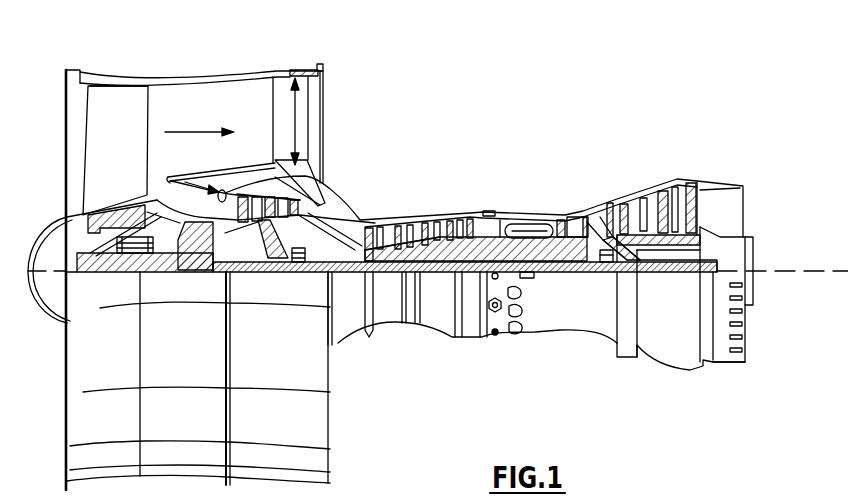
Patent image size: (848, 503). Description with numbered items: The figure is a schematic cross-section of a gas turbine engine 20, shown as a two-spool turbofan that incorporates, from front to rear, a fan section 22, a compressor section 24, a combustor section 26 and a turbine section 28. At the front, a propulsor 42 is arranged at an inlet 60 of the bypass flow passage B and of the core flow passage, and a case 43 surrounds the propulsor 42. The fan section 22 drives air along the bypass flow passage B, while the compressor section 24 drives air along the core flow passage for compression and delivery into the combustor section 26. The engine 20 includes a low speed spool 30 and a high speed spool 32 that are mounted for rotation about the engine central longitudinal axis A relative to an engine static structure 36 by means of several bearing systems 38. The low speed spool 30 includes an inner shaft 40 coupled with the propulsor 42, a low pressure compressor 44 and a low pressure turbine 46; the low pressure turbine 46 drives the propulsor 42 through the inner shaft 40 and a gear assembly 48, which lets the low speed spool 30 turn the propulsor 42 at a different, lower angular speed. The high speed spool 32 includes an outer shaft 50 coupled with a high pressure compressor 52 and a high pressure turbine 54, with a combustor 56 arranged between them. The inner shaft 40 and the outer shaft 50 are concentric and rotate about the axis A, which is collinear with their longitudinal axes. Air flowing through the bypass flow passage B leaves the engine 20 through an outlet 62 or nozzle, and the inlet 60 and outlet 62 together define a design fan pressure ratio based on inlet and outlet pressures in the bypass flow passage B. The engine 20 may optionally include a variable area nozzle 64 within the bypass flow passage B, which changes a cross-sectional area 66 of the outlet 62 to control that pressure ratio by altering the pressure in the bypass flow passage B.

The gas turbine engine 20 is at (530, 105).
The fan section 22 is at (146, 60).
The compressor section 24 is at (368, 198).
The combustor section 26 is at (524, 195).
The turbine section 28 is at (632, 165).
The low speed spool 30 is at (441, 288).
The high speed spool 32 is at (474, 214).
The engine static structure 36 is at (470, 340).
The bearing systems 38 is at (298, 263).
The inner shaft 40 is at (340, 275).
The propulsor 42 is at (82, 153).
The case 43 is at (127, 78).
The low pressure compressor 44 is at (302, 168).
The low pressure turbine 46 is at (660, 180).
The gear assembly 48 is at (203, 270).
The outer shaft 50 is at (527, 270).
The high pressure compressor 52 is at (417, 222).
The high pressure turbine 54 is at (572, 208).
The combustor 56 is at (522, 228).
The inlet 60 is at (66, 97).
The outlet 62 is at (322, 84).
The variable area nozzle 64 is at (300, 70).
The cross-sectional area 66 is at (297, 122).
The engine central longitudinal axis A is at (787, 271).
The bypass flow passage B is at (254, 111).